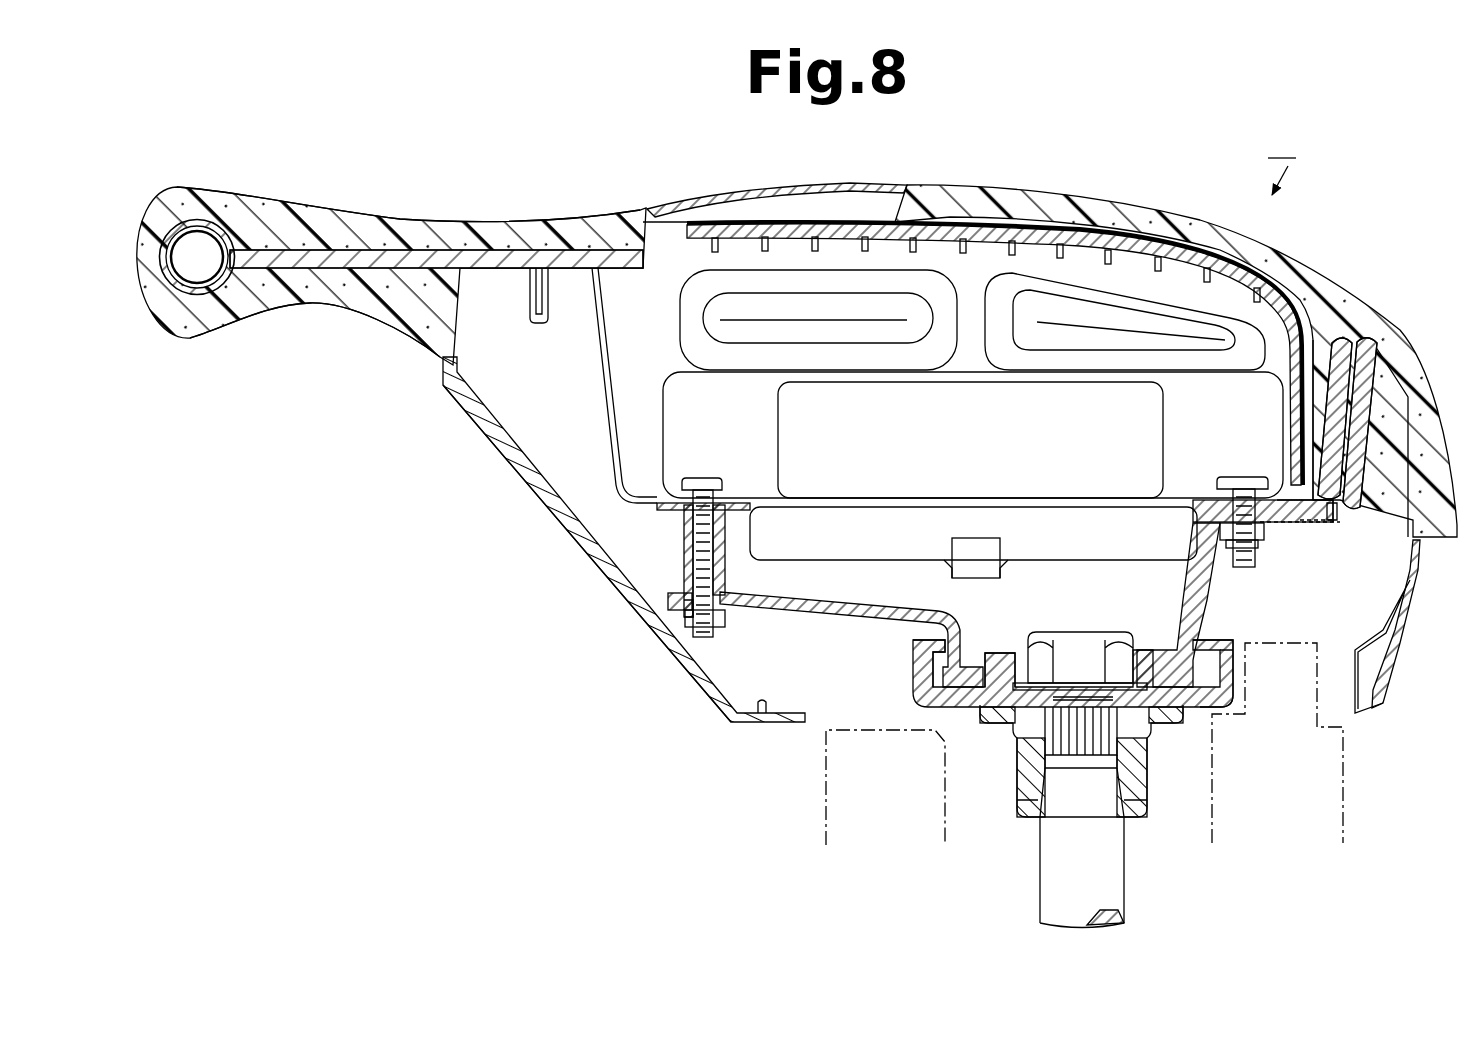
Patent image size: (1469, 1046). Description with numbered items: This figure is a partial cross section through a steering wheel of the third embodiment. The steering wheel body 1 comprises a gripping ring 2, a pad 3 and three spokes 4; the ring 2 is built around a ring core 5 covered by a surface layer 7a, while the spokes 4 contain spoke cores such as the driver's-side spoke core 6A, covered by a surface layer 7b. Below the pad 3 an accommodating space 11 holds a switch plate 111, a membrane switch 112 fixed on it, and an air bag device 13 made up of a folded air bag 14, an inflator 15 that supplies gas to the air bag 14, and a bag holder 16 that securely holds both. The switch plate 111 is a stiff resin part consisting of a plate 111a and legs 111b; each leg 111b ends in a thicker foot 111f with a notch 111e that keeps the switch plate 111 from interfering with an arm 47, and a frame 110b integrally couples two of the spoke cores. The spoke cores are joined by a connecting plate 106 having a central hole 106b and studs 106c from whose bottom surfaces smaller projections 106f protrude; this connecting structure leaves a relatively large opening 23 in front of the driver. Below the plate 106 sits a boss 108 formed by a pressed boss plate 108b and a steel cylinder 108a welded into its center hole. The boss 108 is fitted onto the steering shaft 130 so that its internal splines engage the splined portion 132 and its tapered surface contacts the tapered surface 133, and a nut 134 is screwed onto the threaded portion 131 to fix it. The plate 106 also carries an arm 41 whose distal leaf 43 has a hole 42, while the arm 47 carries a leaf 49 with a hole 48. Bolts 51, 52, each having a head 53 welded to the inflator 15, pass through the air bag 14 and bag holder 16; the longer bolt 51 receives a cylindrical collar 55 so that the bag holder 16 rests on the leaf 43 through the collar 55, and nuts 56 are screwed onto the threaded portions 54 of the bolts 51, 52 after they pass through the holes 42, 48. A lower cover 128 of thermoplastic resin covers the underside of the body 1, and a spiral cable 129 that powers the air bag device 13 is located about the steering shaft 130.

The steering wheel body 1 is at (445, 211).
The gripping ring 2 is at (178, 187).
The pad 3 is at (955, 184).
The spokes 4 is at (357, 222).
The ring core 5 is at (180, 323).
The spoke core 6A is at (300, 247).
The surface layer 7a is at (200, 340).
The surface layer 7b is at (320, 303).
The accommodating space 11 is at (628, 313).
The air bag device 13 is at (679, 359).
The air bag 14 is at (663, 397).
The inflator 15 is at (843, 557).
The bag holder 16 is at (613, 440).
The opening 23 is at (609, 511).
The arm 41 is at (853, 620).
The hole 42 is at (698, 590).
The leaf 43 is at (700, 622).
The arm 47 is at (1243, 640).
The hole 48 is at (1260, 542).
The leaf 49 is at (1283, 527).
The bolt 51 is at (703, 472).
The bolt 52 is at (1245, 472).
The head 53 is at (720, 480).
The threaded portion 54 is at (707, 630).
The cylindrical collar 55 is at (727, 567).
The nut 56 is at (725, 620).
The connecting plate 106 is at (963, 647).
The hole 106b is at (1140, 647).
The stud 106c is at (1003, 663).
The projection 106f is at (933, 697).
The boss 108 is at (1012, 758).
The steel cylinder 108a is at (1020, 797).
The boss plate 108b is at (930, 723).
The frame 110b is at (1347, 447).
The switch plate 111 is at (683, 236).
The plate 111a is at (988, 250).
The leg 111b is at (1287, 337).
The notch 111e is at (1333, 527).
The foot 111f is at (1337, 513).
The membrane switch 112 is at (737, 233).
The lower cover 128 is at (630, 597).
The spiral cable 129 is at (823, 803).
The steering shaft 130 is at (1130, 883).
The threaded portion 131 is at (1150, 667).
The splined portion 132 is at (1130, 747).
The tapered surface 133 is at (1130, 790).
The nut 134 is at (1072, 633).